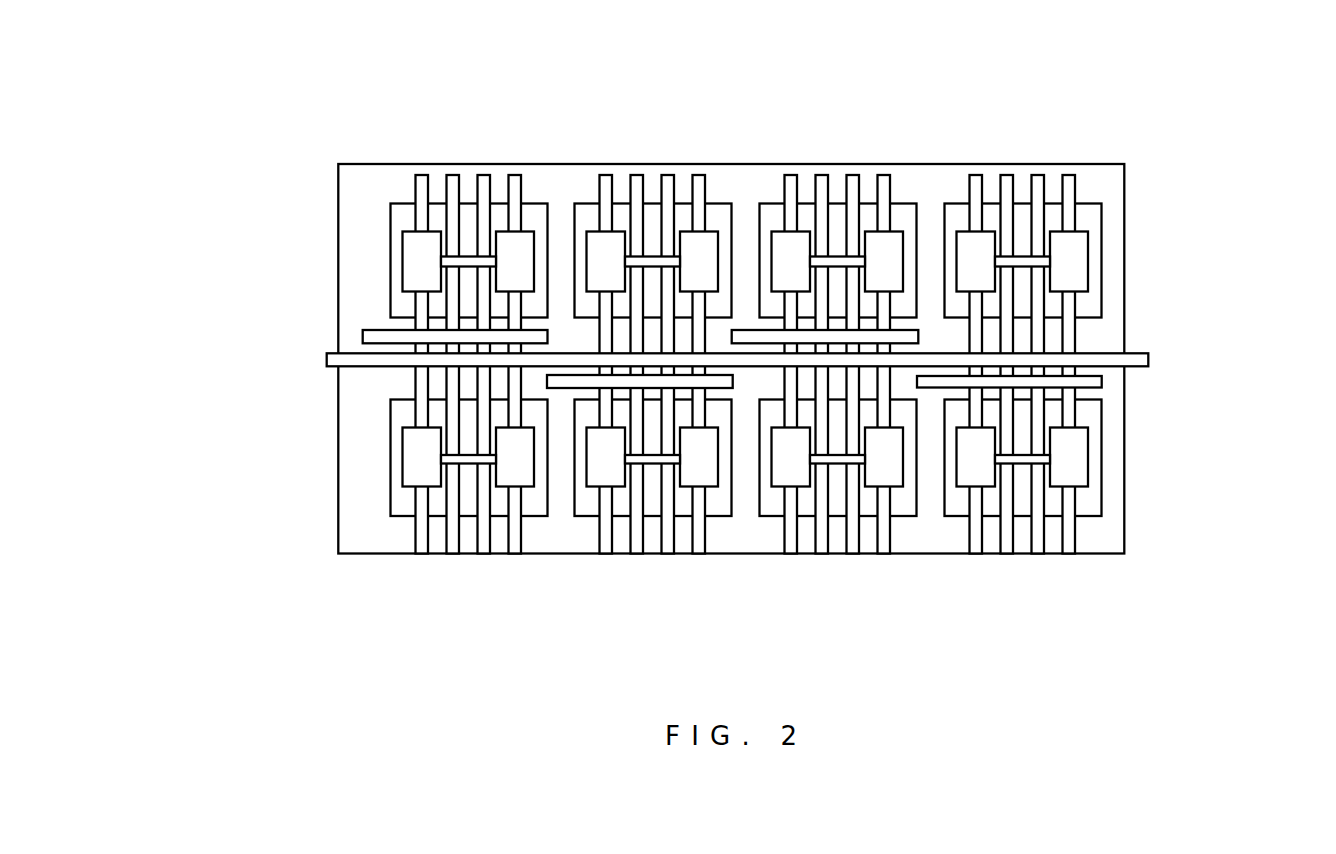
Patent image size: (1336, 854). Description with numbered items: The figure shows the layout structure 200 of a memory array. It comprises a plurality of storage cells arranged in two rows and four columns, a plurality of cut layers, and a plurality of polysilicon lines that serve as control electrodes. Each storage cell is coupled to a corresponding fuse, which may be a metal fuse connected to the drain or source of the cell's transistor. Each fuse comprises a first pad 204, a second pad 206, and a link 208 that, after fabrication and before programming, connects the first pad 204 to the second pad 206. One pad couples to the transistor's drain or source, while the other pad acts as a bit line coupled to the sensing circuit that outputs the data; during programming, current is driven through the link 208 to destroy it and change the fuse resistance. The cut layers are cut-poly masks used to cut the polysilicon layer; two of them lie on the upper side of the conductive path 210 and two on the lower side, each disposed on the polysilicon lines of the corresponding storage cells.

The layout structure 200 is at (240, 93).
The first pad 204 is at (412, 242).
The second pad 206 is at (526, 248).
The link 208 is at (468, 262).
The conductive path 210 is at (338, 360).